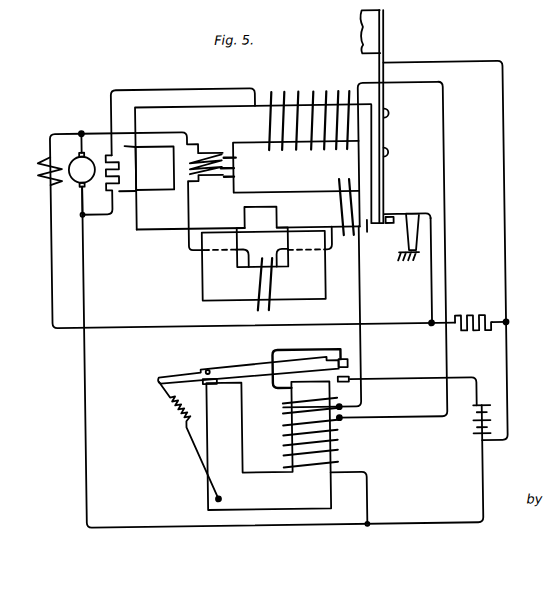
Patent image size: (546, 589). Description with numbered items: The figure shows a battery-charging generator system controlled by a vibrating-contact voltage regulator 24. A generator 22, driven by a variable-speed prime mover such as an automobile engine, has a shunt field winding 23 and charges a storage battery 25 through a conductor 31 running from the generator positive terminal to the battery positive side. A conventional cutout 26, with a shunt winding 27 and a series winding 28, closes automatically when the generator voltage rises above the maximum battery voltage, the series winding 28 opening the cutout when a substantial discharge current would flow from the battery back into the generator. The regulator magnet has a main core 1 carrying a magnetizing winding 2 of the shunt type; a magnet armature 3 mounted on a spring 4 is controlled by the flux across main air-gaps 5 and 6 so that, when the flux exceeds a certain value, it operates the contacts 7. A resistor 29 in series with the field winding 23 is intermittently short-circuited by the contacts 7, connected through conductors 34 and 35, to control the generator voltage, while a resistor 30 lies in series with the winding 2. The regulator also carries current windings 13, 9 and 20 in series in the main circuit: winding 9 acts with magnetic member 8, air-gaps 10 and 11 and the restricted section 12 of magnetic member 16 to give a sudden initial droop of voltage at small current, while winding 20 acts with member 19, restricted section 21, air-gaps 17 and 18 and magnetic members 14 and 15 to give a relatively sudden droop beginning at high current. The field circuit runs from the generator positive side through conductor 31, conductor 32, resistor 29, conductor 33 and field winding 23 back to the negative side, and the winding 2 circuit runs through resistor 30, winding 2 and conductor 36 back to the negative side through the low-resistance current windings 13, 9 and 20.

The main core 1 is at (247, 102).
The magnetizing winding 2 is at (304, 97).
The magnet armature 3 is at (384, 175).
The spring 4 is at (387, 98).
The main air-gap 5 is at (370, 109).
The main air-gap 6 is at (368, 222).
The contacts 7 is at (396, 217).
The magnetic member 8 is at (227, 294).
The winding 9 is at (270, 302).
The air-gap 10 is at (236, 226).
The air-gap 11 is at (287, 227).
The restricted section 12 is at (266, 202).
The winding 13 is at (341, 184).
The magnetic member 14 is at (168, 111).
The magnetic member 15 is at (139, 167).
The magnetic member 16 is at (158, 224).
The air-gap 17 is at (138, 144).
The air-gap 18 is at (140, 188).
The member 19 is at (238, 185).
The winding 20 is at (242, 152).
The restricted section 21 is at (248, 168).
The generator 22 is at (92, 178).
The shunt field winding 23 is at (44, 157).
The vibrating-contact regulator 24 is at (296, 167).
The storage battery 25 is at (472, 423).
The cutout 26 is at (263, 438).
The shunt winding 27 is at (333, 439).
The series winding 28 is at (282, 403).
The resistor 29 is at (468, 318).
The resistor 30 is at (110, 153).
The conductor 31 is at (83, 439).
The conductor 32 is at (510, 358).
The conductor 33 is at (146, 326).
The conductor 34 is at (428, 290).
The conductor 35 is at (508, 271).
The conductor 36 is at (448, 175).